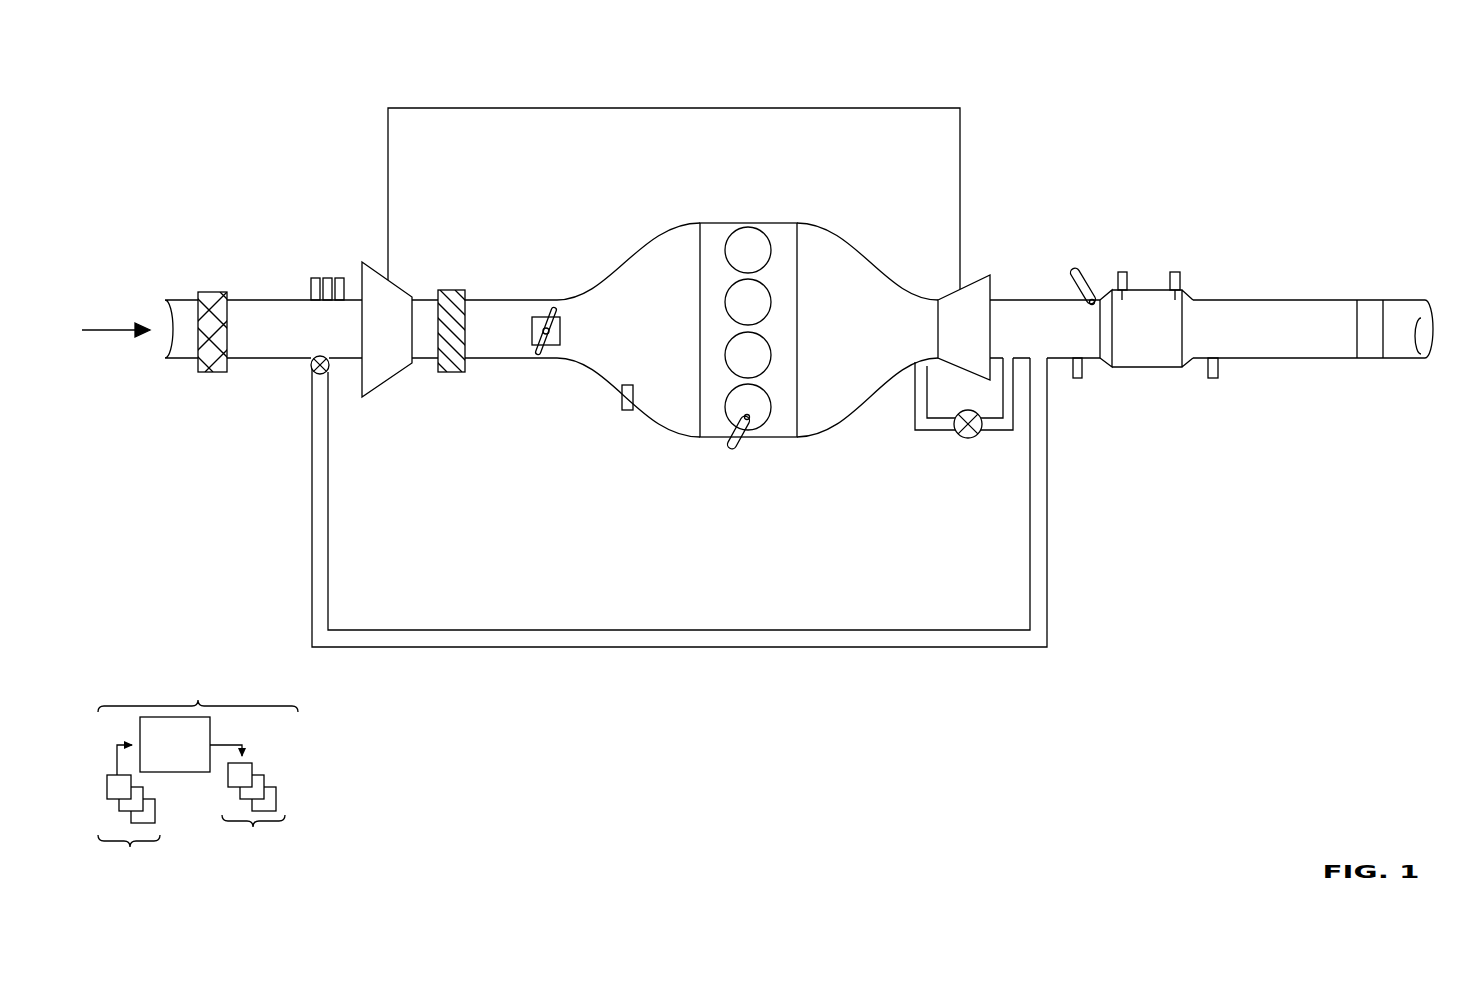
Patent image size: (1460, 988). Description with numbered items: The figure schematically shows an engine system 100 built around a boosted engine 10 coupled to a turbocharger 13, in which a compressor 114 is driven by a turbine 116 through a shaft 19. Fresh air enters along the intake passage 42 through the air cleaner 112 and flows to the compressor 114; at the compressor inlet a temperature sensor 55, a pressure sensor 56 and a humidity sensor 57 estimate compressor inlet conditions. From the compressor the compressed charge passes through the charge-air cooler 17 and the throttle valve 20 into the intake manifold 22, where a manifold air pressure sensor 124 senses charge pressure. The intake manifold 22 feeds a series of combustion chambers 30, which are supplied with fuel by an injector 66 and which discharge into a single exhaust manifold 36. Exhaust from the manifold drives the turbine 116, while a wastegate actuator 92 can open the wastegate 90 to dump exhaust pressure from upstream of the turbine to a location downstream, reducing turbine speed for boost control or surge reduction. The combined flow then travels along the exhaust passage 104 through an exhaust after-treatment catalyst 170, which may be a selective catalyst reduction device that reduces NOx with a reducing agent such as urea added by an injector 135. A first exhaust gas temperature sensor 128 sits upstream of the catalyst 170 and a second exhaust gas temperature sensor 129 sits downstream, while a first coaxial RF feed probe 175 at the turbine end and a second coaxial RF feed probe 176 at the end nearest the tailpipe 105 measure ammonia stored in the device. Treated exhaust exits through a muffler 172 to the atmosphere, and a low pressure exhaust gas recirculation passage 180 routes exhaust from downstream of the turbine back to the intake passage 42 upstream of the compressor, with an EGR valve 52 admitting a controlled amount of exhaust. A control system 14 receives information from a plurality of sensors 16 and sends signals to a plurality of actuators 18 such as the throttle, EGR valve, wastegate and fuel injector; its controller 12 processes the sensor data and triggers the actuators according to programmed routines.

The engine 10 is at (797, 312).
The engine system 100 is at (1291, 172).
The controller 12 is at (972, 236).
The turbocharger 13 is at (380, 407).
The control system 14 is at (198, 669).
The sensors 16 is at (135, 817).
The actuators 18 is at (255, 817).
The charge-air cooler 17 is at (450, 290).
The shaft 19 is at (700, 108).
The throttle valve 20 is at (560, 338).
The intake manifold 22 is at (582, 330).
The combustion chambers 30 is at (768, 240).
The exhaust manifold 36 is at (867, 330).
The intake passage 42 is at (182, 358).
The EGR valve 52 is at (310, 365).
The temperature sensor 55 is at (315, 278).
The pressure sensor 56 is at (327, 278).
The humidity sensor 57 is at (339, 278).
The injector 66 is at (743, 435).
The wastegate 90 is at (915, 432).
The wastegate actuator 92 is at (968, 438).
The exhaust passage 104 is at (1265, 300).
The tailpipe 105 is at (1402, 358).
The air cleaner 112 is at (213, 292).
The compressor 114 is at (387, 329).
The turbine 116 is at (964, 327).
The manifold air pressure sensor 124 is at (622, 402).
The first exhaust gas temperature sensor 128 is at (1078, 378).
The second exhaust gas temperature sensor 129 is at (1212, 378).
The injector 135 is at (1073, 270).
The exhaust after-treatment catalyst 170 is at (1146, 328).
The muffler 172 is at (1367, 300).
The first coaxial RF feed probe 175 is at (1121, 272).
The second coaxial RF feed probe 176 is at (1175, 272).
The low pressure exhaust gas recirculation passage 180 is at (773, 630).